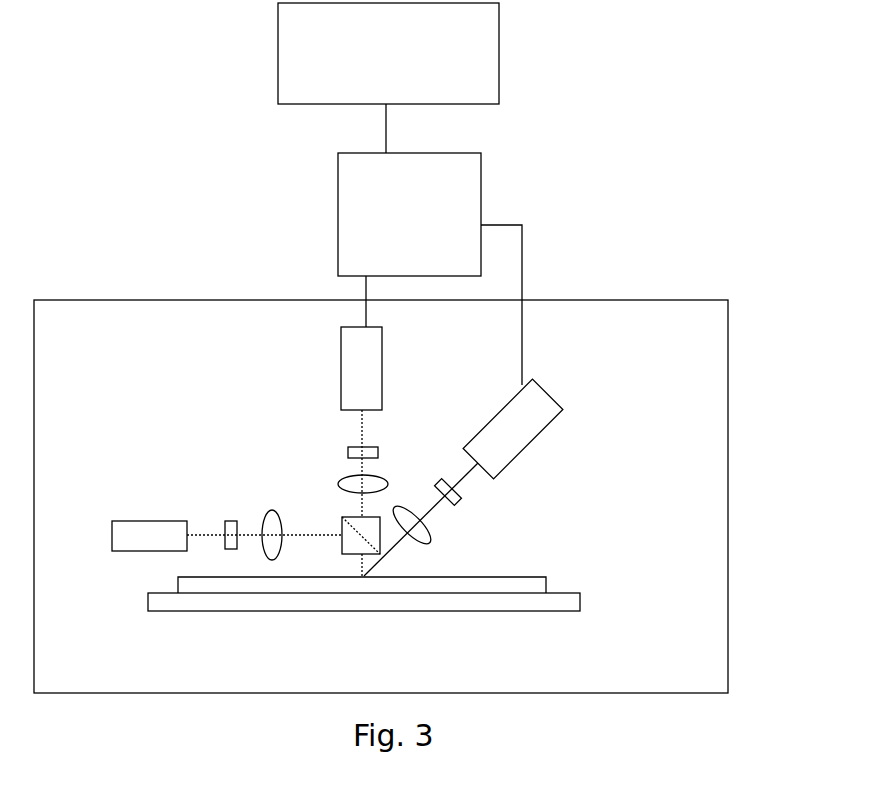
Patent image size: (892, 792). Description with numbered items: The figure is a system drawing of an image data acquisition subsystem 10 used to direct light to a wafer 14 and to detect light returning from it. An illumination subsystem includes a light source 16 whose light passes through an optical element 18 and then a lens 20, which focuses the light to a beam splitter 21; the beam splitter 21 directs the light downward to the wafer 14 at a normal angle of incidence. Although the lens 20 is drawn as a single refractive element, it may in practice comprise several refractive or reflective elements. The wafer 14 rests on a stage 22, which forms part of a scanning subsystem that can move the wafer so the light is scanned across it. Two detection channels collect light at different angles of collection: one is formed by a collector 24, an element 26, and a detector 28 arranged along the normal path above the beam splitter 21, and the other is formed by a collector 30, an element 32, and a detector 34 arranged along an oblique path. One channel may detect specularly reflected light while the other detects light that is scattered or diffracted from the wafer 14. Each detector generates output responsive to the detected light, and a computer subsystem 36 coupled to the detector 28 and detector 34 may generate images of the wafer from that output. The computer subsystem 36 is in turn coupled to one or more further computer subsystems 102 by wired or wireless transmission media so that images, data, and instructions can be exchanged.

The image data acquisition subsystem 10 is at (727, 320).
The wafer 14 is at (178, 576).
The light source 16 is at (120, 520).
The optical element 18 is at (230, 520).
The lens 20 is at (268, 510).
The beam splitter 21 is at (352, 518).
The stage 22 is at (148, 605).
The collector 24 is at (343, 478).
The element 26 is at (348, 448).
The detector 28 is at (340, 372).
The collector 30 is at (430, 540).
The element 32 is at (458, 503).
The detector 34 is at (545, 428).
The computer subsystem 36 is at (409, 214).
The computer subsystem(s) 102 is at (388, 53).